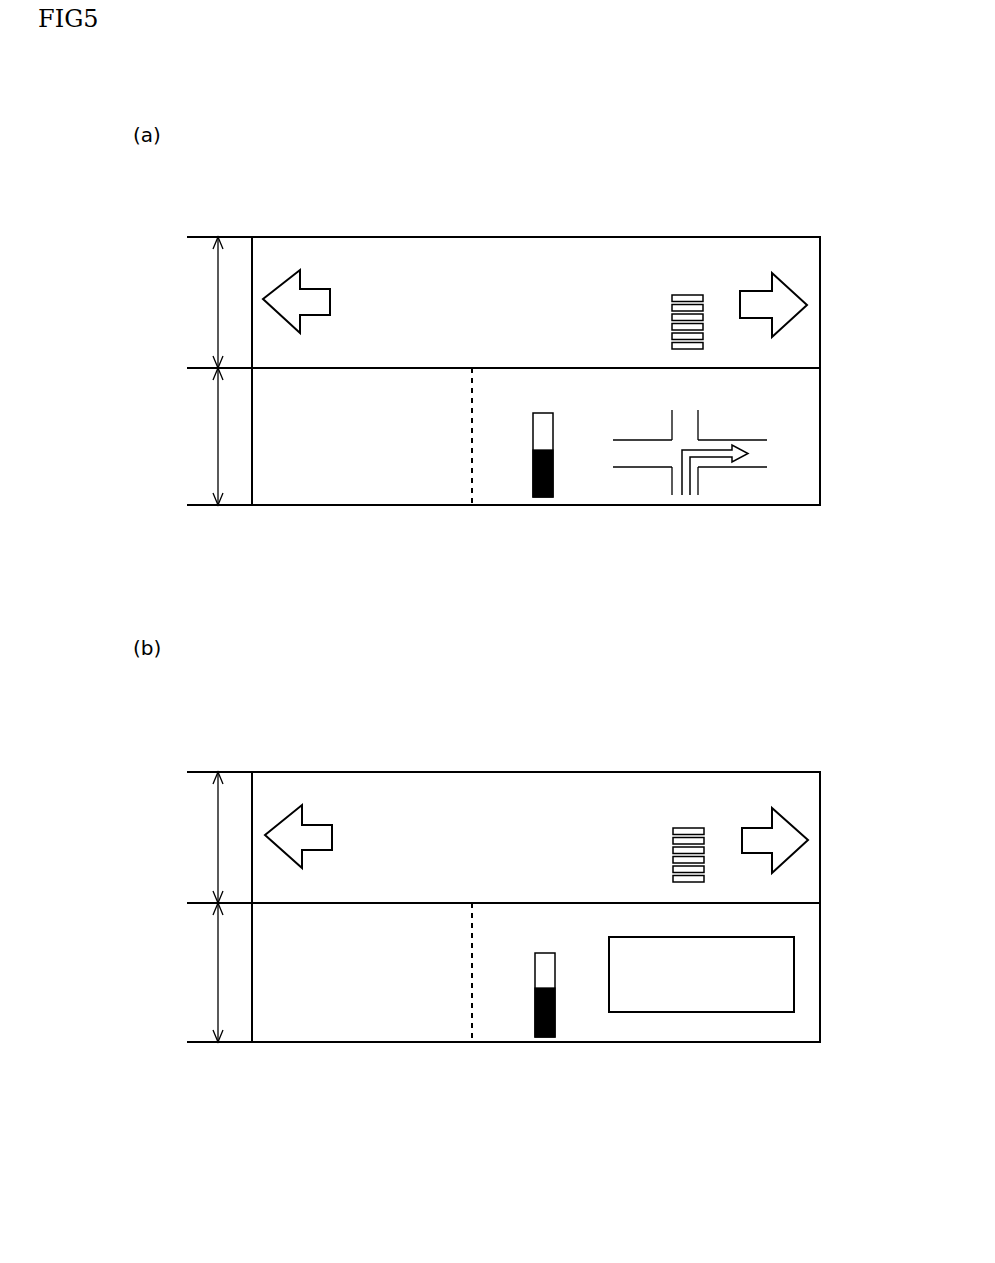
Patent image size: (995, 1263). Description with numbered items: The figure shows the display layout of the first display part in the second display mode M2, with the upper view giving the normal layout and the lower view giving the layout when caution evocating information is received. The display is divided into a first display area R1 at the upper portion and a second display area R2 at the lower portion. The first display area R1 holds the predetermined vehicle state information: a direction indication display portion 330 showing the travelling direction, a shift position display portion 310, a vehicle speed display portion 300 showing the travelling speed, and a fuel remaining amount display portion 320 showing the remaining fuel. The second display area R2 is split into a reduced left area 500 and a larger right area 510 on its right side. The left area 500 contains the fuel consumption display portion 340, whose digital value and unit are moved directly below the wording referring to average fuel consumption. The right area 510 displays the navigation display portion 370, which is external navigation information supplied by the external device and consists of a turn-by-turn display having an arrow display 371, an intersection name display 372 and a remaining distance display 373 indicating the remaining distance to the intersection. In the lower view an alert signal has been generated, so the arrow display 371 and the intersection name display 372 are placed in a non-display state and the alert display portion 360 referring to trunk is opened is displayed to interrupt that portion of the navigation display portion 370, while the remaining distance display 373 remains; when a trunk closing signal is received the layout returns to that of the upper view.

The vehicle speed display portion 300 is at (540, 817).
The shift position display portion 310 is at (417, 812).
The fuel remaining amount display portion 320 is at (693, 828).
The direction indication display portion 330 is at (778, 832).
The fuel consumption display portion 340 is at (367, 475).
The alert display portion 360 is at (728, 993).
The navigation display portion 370 is at (742, 481).
The arrow display 371 is at (687, 492).
The intersection name display 372 is at (782, 398).
The remaining distance display 373 is at (540, 497).
The left area 500 is at (285, 493).
The right area 510 is at (608, 495).
The second display mode M2 is at (630, 215).
The first display area R1 is at (215, 298).
The second display area R2 is at (217, 440).